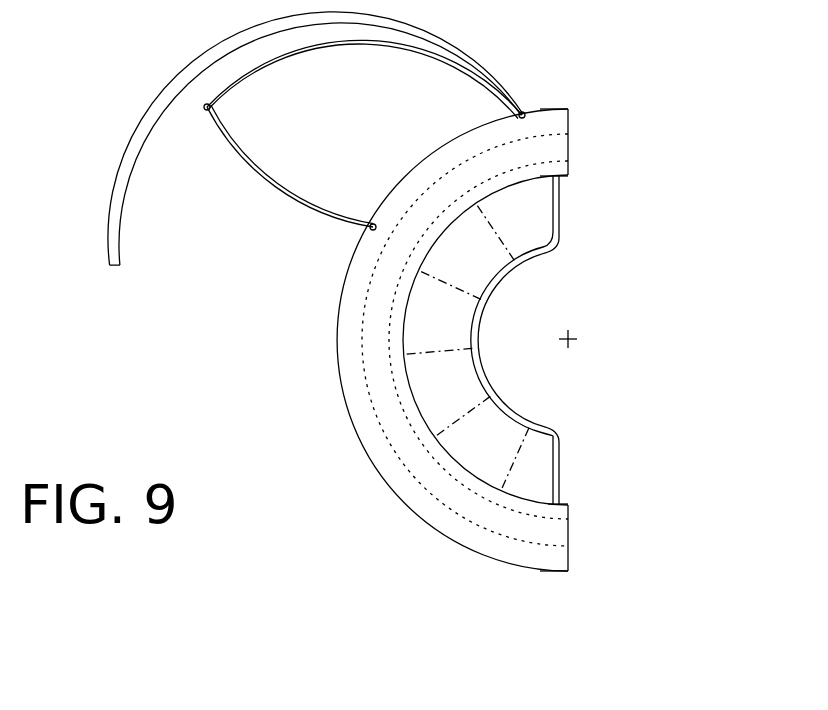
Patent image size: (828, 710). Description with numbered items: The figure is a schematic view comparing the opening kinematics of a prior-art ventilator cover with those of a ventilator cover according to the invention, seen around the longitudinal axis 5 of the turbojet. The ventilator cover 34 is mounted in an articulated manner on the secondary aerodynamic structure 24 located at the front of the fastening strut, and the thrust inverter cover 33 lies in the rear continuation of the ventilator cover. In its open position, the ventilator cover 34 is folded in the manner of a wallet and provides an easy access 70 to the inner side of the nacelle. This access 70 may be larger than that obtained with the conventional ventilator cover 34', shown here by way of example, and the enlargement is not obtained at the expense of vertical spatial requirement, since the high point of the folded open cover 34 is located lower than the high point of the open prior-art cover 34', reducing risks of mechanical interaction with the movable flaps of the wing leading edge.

The longitudinal axis 5 is at (568, 339).
The secondary aerodynamic structure 24 is at (537, 113).
The thrust inverter cover 33 is at (460, 497).
The ventilator cover 34 is at (364, 151).
The conventional ventilator cover 34' is at (300, 138).
The access 70 is at (292, 323).